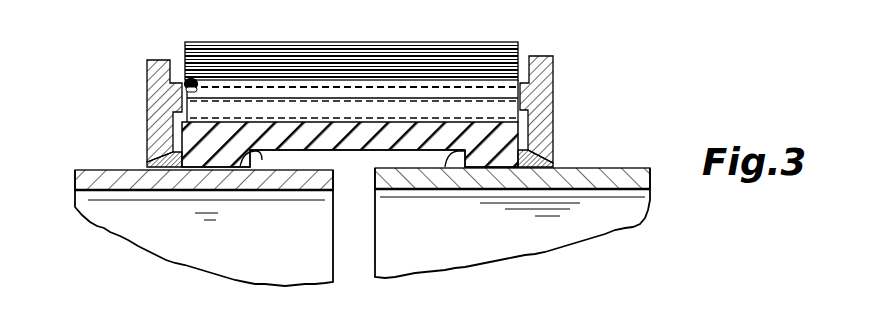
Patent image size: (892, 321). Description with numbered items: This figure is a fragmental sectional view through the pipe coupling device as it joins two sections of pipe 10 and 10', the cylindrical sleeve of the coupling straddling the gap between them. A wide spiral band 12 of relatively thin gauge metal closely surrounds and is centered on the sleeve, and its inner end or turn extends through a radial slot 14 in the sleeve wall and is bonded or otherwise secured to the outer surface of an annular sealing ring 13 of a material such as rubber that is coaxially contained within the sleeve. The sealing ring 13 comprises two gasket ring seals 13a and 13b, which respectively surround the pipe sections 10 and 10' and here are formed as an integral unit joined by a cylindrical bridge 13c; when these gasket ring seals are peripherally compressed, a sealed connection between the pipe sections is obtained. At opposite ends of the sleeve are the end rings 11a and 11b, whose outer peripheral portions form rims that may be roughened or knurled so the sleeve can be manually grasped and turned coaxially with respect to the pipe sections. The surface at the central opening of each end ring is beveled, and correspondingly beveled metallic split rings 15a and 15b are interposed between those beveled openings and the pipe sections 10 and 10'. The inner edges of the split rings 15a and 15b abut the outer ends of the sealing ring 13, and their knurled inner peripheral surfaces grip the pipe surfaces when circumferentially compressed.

The pipe section 10 is at (204, 228).
The pipe section 10' is at (530, 223).
The end ring 11a is at (147, 68).
The end ring 11b is at (553, 66).
The spiral band 12 is at (316, 48).
The sealing ring 13 is at (525, 128).
The gasket ring seal 13a is at (257, 167).
The gasket ring seal 13b is at (446, 166).
The cylindrical bridge 13c is at (356, 150).
The radial slot 14 is at (189, 81).
The split ring 15a is at (170, 168).
The split ring 15b is at (536, 168).